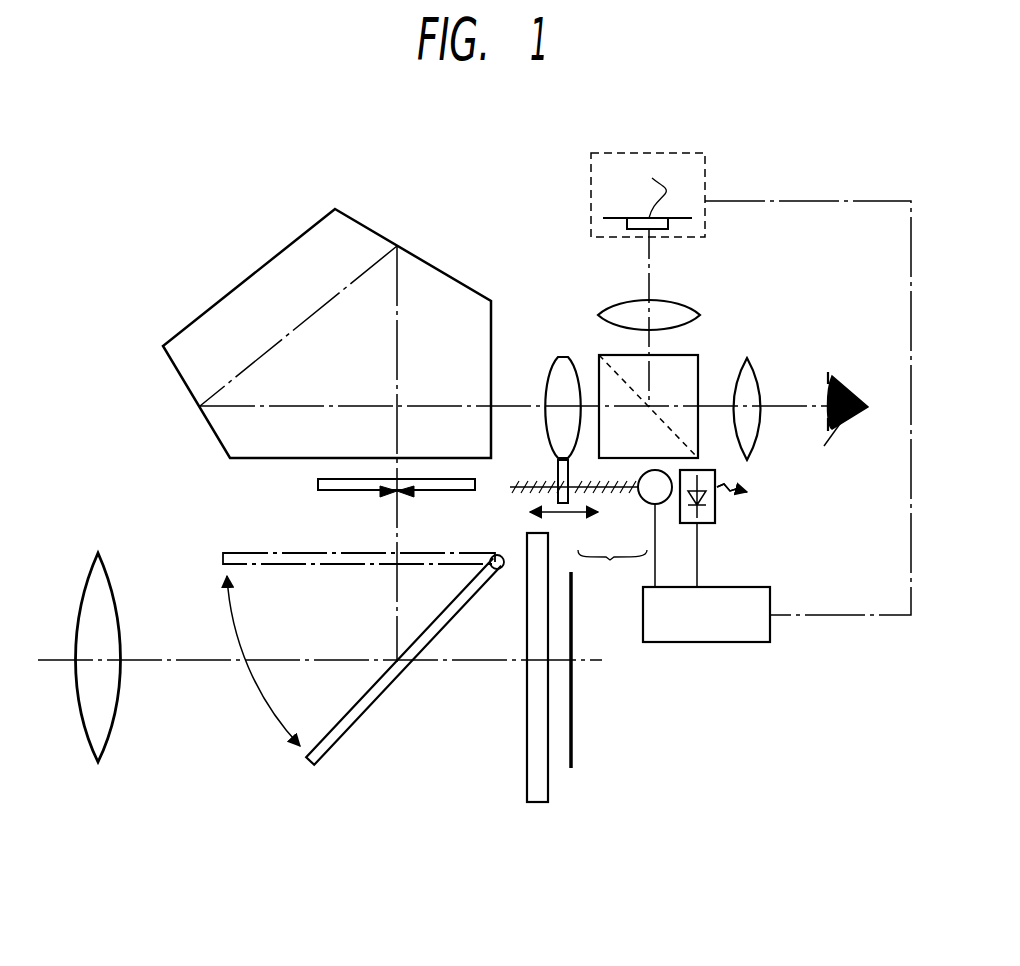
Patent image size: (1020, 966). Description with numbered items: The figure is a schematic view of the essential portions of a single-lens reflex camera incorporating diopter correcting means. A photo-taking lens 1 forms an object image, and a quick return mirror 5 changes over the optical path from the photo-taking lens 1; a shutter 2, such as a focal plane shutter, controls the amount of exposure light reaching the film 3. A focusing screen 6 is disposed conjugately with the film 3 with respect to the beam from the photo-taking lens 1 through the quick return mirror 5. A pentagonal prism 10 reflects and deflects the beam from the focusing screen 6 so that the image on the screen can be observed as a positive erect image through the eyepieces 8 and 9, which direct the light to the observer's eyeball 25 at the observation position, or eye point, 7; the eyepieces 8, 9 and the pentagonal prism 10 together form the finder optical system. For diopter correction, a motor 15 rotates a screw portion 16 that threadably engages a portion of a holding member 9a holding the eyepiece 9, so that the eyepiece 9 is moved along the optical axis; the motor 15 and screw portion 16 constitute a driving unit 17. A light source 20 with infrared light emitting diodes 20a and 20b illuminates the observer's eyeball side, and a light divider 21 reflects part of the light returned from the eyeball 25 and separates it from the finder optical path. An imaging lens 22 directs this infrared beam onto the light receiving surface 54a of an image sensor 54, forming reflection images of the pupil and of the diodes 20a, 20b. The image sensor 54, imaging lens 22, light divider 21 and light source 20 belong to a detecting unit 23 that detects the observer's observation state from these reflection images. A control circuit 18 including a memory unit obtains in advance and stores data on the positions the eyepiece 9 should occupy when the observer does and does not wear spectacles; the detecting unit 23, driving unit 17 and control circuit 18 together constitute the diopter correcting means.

The photo-taking lens 1 is at (112, 590).
The shutter 2 is at (550, 783).
The film 3 is at (573, 728).
The quick return mirror 5 is at (328, 750).
The focusing screen 6 is at (333, 490).
The observation position (eye point) 7 is at (828, 375).
The eyepiece 8 is at (755, 368).
The eyepiece (diopter correcting lens) 9 is at (566, 354).
The holding member 9a is at (558, 474).
The pentagonal prism 10 is at (253, 273).
The motor for diopter correction 15 is at (648, 504).
The screw portion 16 is at (615, 497).
The driving unit 17 is at (612, 571).
The control circuit 18 is at (755, 638).
The light source 20 is at (712, 528).
The infrared light emitting diode 20a is at (717, 508).
The infrared light emitting diode 20b is at (786, 507).
The light divider 21 is at (700, 365).
The imaging lens 22 is at (670, 307).
The detecting unit 23 is at (705, 180).
The eyeball 25 is at (835, 433).
The image sensor 54 is at (612, 215).
The light receiving surface 54a is at (632, 231).